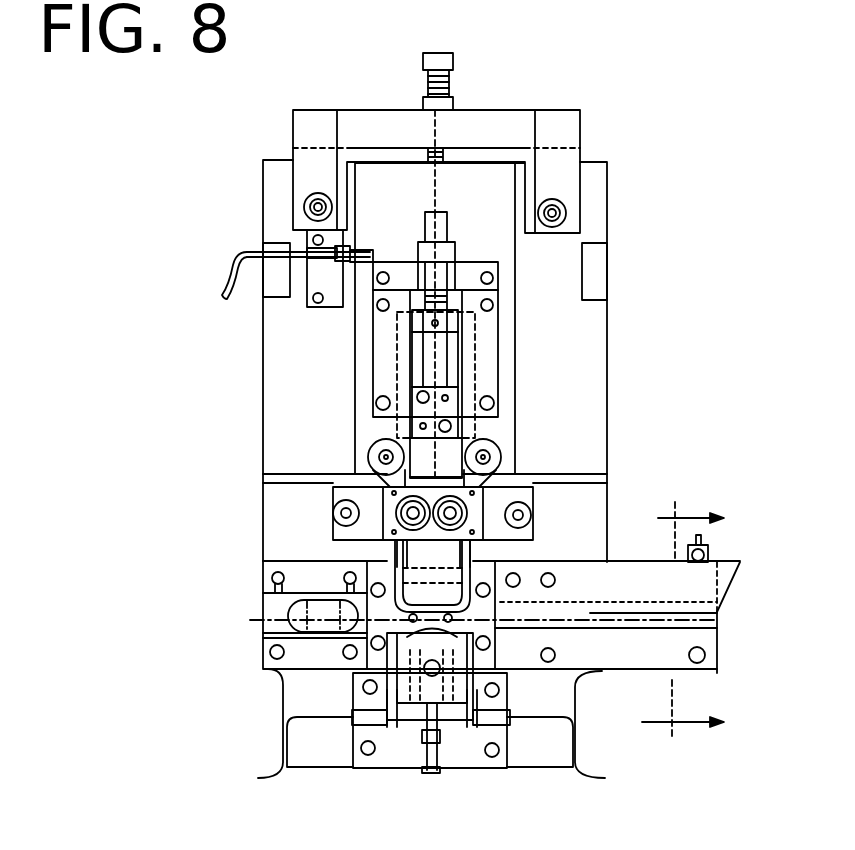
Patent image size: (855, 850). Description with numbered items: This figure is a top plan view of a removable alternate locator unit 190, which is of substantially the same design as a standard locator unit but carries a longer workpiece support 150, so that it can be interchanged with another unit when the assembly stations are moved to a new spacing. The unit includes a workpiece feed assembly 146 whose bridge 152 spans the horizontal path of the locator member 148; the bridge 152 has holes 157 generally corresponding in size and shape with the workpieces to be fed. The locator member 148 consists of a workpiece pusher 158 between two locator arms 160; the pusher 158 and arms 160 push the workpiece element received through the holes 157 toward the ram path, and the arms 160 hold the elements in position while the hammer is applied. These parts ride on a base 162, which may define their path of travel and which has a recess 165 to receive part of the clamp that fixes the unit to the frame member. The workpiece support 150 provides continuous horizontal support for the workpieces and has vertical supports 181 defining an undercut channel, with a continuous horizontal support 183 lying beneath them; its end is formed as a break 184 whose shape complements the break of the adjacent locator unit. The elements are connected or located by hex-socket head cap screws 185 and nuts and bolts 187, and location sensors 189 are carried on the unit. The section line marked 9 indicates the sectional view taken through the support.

The workpiece feed assembly 146 is at (342, 532).
The locator member 148 is at (452, 453).
The workpiece support 150 is at (622, 577).
The bridge 152 is at (340, 490).
The holes 157 is at (430, 500).
The workpiece pusher 158 is at (423, 453).
The locator arms 160 is at (372, 462).
The base 162 is at (452, 307).
The recess 165 is at (598, 262).
The vertical supports 181 is at (682, 667).
The continuous horizontal support 183 is at (708, 622).
The break 184 is at (733, 580).
The hex-socket head cap screws 185 is at (487, 278).
The nuts and bolts 187 is at (333, 517).
The location sensors 189 is at (312, 253).
The alternate locator unit 190 is at (271, 148).
The section line 9- 9 is at (683, 622).